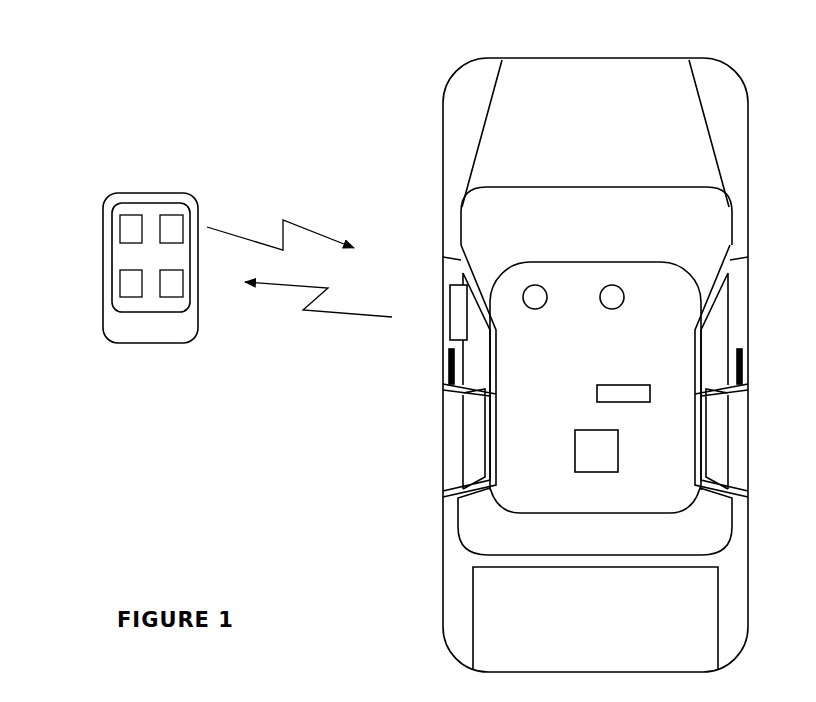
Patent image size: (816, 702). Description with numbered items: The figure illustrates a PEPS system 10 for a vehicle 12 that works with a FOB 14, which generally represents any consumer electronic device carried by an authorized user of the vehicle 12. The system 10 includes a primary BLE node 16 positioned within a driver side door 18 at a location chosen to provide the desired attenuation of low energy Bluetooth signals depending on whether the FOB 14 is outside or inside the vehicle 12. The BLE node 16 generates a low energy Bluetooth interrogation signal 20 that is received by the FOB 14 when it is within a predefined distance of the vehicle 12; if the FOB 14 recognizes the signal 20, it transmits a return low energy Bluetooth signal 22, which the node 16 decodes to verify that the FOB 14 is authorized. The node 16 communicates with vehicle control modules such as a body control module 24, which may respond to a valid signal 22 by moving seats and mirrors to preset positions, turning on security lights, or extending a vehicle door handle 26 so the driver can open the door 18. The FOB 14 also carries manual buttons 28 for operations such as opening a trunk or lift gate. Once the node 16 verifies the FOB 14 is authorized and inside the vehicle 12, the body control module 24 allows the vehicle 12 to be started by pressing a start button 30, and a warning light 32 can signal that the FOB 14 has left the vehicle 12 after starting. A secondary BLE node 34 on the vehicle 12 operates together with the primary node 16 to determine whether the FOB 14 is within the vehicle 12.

The PEPS system 10 is at (270, 75).
The vehicle 12 is at (434, 184).
The FOB 14 is at (146, 186).
The primary BLE node 16 is at (448, 324).
The driver side door 18 is at (447, 270).
The low energy Bluetooth interrogation signal 20 is at (318, 300).
The return low energy Bluetooth signal 22 is at (314, 232).
The body control module 24 is at (574, 455).
The vehicle door handle 26 is at (445, 376).
The manual buttons 28 is at (122, 283).
The start button 30 is at (536, 284).
The warning light 32 is at (613, 284).
The secondary BLE node 34 is at (625, 384).